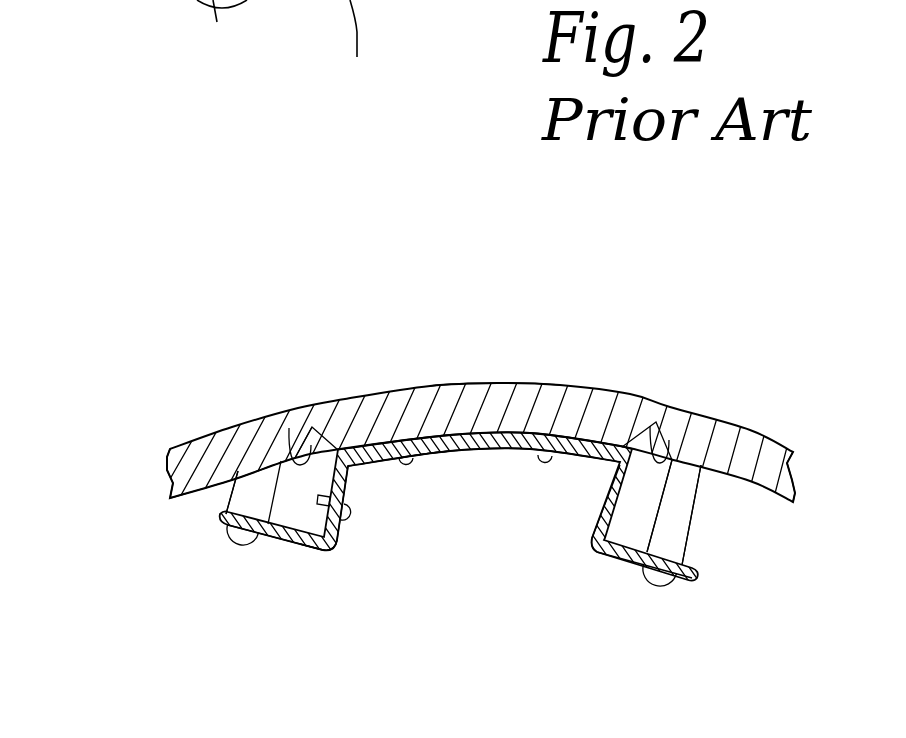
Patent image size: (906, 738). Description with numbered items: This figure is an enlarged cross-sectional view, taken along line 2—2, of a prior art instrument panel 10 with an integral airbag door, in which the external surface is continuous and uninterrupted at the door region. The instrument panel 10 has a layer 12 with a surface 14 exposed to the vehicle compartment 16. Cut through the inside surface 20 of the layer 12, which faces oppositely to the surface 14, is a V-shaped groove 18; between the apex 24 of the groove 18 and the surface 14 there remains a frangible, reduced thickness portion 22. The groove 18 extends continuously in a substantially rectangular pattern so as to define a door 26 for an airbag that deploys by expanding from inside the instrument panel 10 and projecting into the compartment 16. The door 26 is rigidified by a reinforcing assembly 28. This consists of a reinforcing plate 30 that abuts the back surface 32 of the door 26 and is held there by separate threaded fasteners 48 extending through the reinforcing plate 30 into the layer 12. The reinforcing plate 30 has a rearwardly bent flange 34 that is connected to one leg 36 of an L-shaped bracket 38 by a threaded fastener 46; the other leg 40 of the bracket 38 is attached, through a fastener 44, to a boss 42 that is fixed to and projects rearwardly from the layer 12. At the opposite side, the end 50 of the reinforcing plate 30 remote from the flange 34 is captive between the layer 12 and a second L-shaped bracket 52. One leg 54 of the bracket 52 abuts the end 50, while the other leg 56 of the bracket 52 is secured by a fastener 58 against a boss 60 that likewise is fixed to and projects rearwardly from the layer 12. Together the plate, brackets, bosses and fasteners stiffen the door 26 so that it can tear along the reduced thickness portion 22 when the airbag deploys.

The section line 2— 2 is at (355, 32).
The instrument panel 10 is at (590, 353).
The layer 12 is at (605, 402).
The surface 14 is at (772, 443).
The vehicle compartment 16 is at (583, 231).
The V-shaped groove 18 is at (262, 482).
The inside surface 20 is at (185, 494).
The frangible, reduced thickness portion 22 is at (312, 427).
The apex 24 is at (295, 458).
The door 26 is at (488, 405).
The reinforcing assembly 28 is at (537, 507).
The reinforcing plate 30 is at (467, 453).
The back surface 32 is at (448, 453).
The rearwardly bent flange 34 is at (322, 482).
The leg 36 is at (340, 540).
The L-shaped bracket 38 is at (340, 552).
The leg 40 is at (285, 541).
The boss 42 is at (262, 482).
The fastener 44 is at (240, 545).
The threaded fastener 46 is at (352, 509).
The threaded fasteners 48 is at (406, 460).
The end 50 is at (656, 422).
The L-shaped bracket 52 is at (593, 553).
The leg 54 is at (609, 491).
The leg 56 is at (625, 558).
The fastener 58 is at (660, 590).
The boss 60 is at (673, 533).